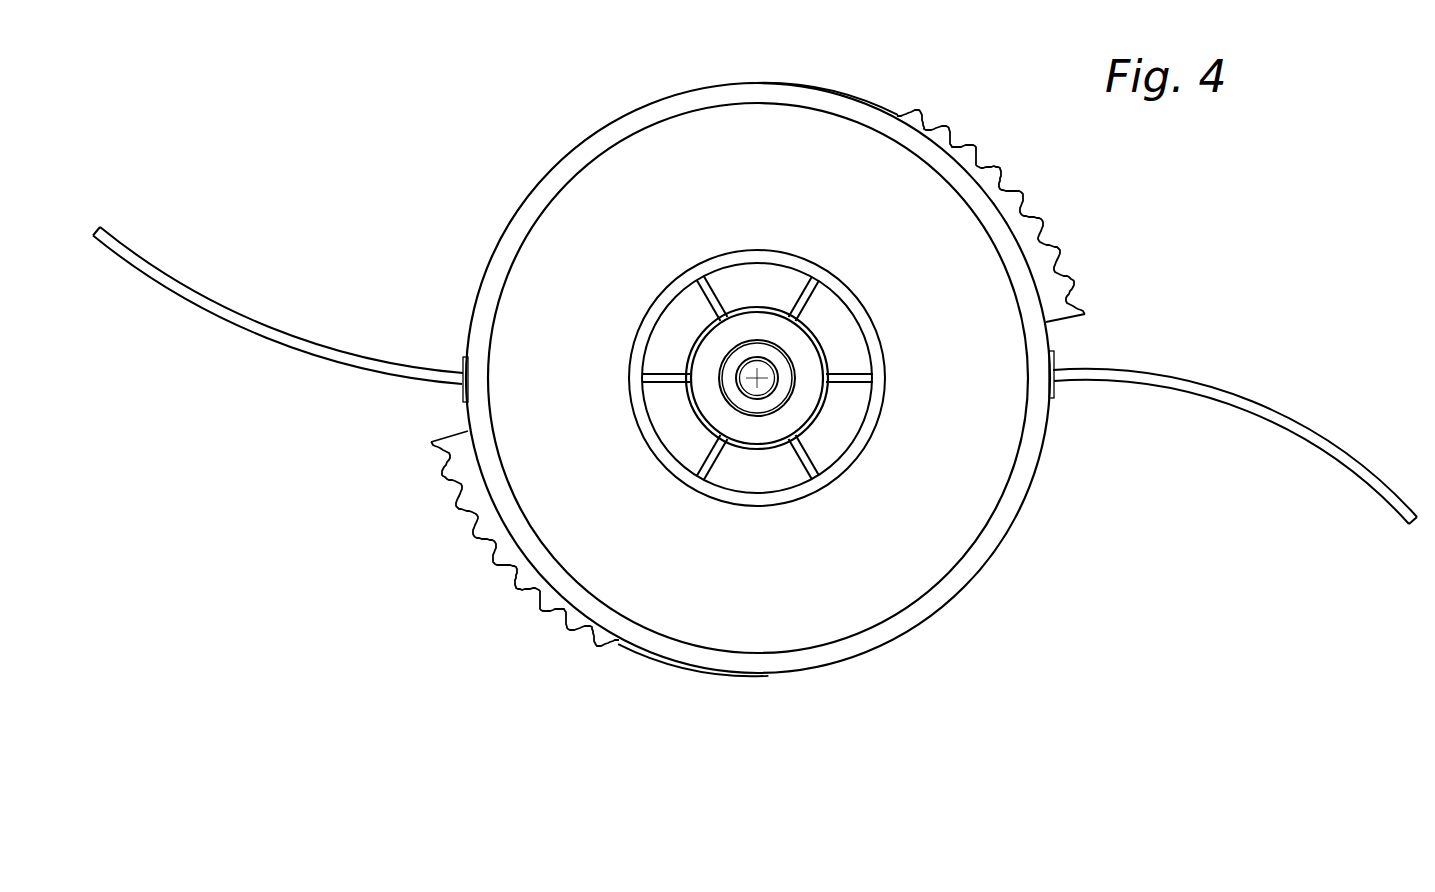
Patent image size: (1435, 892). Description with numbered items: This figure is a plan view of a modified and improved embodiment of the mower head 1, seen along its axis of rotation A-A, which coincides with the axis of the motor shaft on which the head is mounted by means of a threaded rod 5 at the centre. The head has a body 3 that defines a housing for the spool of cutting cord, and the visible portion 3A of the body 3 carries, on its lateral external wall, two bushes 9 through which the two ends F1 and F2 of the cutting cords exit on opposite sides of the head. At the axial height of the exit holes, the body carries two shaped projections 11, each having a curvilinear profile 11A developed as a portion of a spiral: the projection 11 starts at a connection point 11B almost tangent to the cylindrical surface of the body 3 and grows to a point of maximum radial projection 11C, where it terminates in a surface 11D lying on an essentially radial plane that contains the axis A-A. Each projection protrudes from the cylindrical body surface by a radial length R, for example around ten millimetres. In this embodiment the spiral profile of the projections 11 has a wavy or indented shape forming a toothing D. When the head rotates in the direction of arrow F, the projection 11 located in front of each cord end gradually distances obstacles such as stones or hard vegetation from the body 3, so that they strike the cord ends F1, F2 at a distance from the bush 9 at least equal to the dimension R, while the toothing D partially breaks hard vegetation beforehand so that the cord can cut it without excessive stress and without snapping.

The mower head 1 is at (579, 107).
The body 3 is at (903, 648).
The portion of the body 3A is at (846, 566).
The threaded rod 5 is at (745, 392).
The bush 9 is at (462, 360).
The projection 11 is at (757, 392).
The curvilinear profile 11A is at (884, 96).
The connection point 11B is at (782, 84).
The point of maximum radial projection 11C is at (1085, 316).
The surface 11D is at (1068, 330).
The toothing D is at (1021, 206).
The radial length of projection R is at (462, 420).
The direction of rotation F is at (1040, 522).
The end of cutting cord F1 is at (198, 305).
The end of cutting cord F2 is at (1342, 472).
The axis of rotation A-A is at (772, 372).